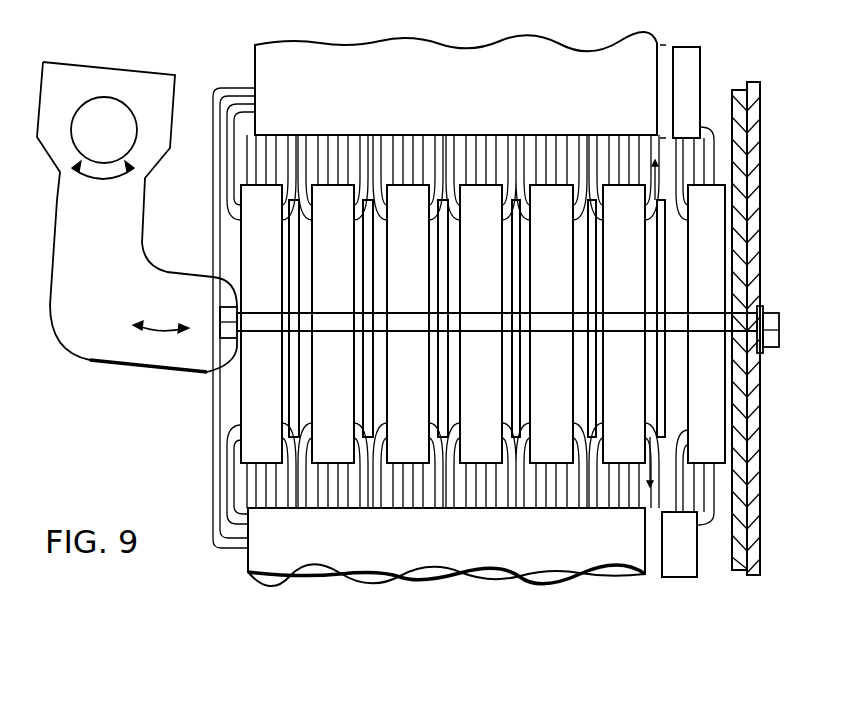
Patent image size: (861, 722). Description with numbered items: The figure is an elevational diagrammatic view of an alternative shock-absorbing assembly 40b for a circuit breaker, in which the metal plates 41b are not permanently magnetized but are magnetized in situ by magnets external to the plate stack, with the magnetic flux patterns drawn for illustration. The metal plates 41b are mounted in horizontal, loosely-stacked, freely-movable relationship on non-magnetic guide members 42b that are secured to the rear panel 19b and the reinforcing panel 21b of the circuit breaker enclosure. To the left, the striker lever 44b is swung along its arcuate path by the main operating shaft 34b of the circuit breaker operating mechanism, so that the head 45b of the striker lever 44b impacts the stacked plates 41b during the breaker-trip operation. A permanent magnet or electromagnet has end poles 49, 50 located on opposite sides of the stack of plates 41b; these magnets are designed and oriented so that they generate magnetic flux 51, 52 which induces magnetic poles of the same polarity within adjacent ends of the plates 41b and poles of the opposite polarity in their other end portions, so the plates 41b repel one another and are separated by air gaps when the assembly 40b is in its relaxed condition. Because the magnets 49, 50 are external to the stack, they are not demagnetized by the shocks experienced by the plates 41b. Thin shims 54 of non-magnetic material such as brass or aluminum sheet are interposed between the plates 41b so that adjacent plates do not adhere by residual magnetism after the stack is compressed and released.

The main operating shaft 34b is at (106, 122).
The shock-absorbing assembly 40b is at (372, 24).
The end pole 49 is at (683, 53).
The end pole 50 is at (680, 570).
The magnetic flux 51 is at (393, 153).
The magnetic flux 52 is at (397, 497).
The shims 54 is at (585, 372).
The metal plates 41b is at (420, 297).
The non-magnetic guide members 42b is at (670, 325).
The striker lever 44b is at (70, 306).
The head 45b is at (210, 345).
The reinforcing panel 21b is at (732, 102).
The rear panel 19b is at (753, 87).